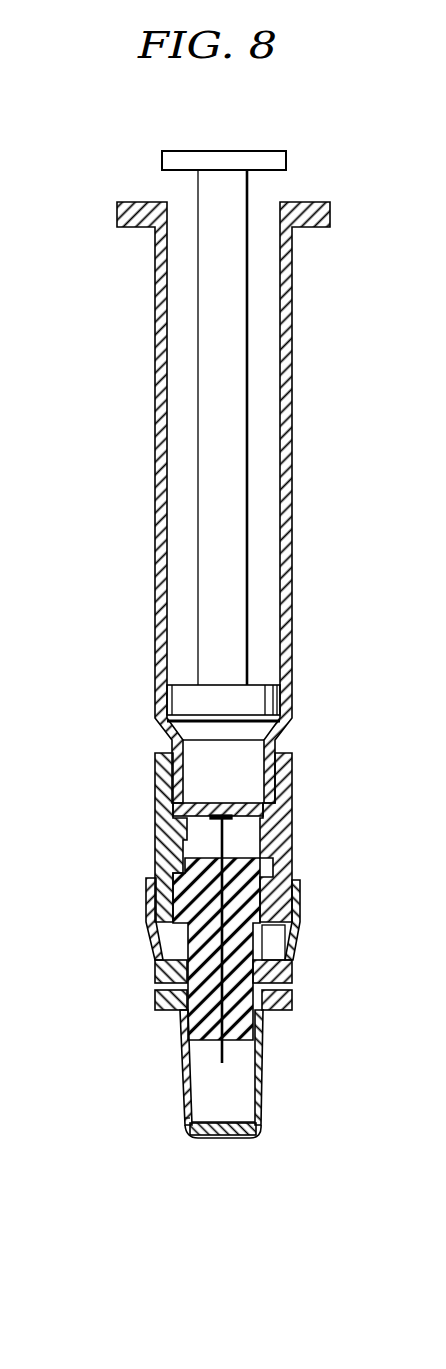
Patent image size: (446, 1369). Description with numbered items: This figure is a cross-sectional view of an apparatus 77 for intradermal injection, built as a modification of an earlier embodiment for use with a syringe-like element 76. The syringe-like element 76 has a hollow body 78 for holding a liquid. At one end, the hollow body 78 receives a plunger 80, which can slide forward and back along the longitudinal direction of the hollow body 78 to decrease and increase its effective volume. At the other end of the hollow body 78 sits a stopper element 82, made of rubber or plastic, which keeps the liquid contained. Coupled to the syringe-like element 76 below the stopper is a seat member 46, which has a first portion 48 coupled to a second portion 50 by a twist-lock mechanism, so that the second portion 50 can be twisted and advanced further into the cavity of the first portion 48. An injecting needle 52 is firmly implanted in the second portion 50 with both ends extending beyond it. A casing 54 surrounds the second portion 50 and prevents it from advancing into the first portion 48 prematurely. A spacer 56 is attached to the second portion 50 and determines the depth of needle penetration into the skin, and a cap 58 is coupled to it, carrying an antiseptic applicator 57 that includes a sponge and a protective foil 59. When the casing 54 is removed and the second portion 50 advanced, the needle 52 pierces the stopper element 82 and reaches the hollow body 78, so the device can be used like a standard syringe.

The syringe-like element 76 is at (84, 369).
The apparatus 77 is at (97, 742).
The hollow body 78 is at (155, 523).
The plunger 80 is at (220, 152).
The stopper element 82 is at (230, 803).
The first portion 48 is at (157, 820).
The seat member 46 is at (133, 867).
The second portion 50 is at (262, 938).
The needle 52 is at (203, 1048).
The casing 54 is at (153, 947).
The spacer 56 is at (271, 998).
The antiseptic applicator 57 is at (223, 1138).
The cap 58 is at (265, 1070).
The protective foil 59 is at (184, 1118).